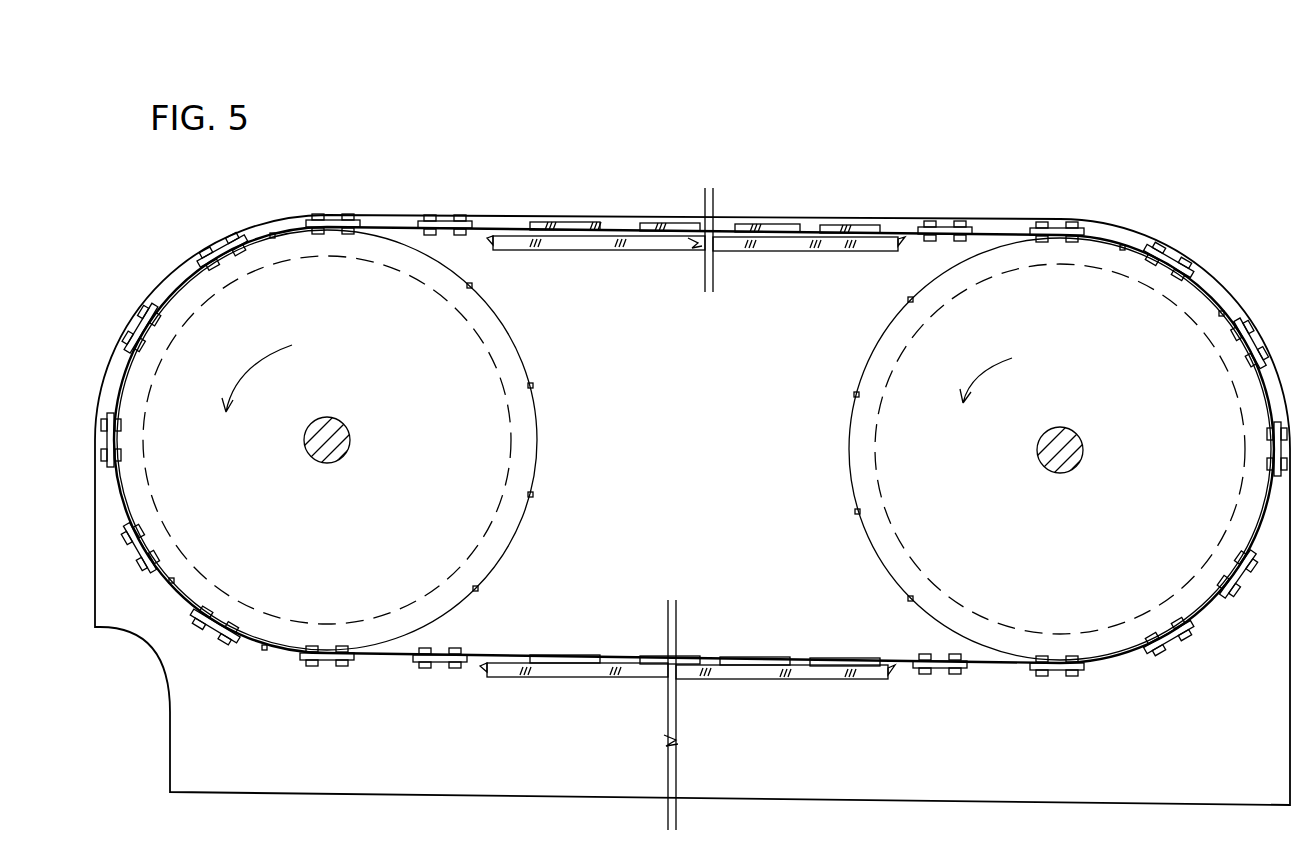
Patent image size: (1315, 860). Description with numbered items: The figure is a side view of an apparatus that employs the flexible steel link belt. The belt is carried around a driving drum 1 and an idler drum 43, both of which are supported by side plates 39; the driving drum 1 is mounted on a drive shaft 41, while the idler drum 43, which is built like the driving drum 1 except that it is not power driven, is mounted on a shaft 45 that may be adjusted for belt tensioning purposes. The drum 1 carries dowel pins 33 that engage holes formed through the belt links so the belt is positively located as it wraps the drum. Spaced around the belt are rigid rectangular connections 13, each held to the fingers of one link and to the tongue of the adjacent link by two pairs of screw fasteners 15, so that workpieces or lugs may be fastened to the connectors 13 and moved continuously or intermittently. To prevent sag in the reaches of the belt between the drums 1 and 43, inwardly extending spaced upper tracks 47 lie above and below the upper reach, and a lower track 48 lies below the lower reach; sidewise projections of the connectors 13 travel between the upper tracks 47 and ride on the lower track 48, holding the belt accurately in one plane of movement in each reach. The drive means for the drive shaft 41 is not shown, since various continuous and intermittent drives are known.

The drum 1 is at (440, 403).
The rigid connection 13 is at (343, 226).
The screw fastener 15 is at (318, 221).
The dowel pin 33 is at (273, 233).
The side plate 39 is at (447, 226).
The drive shaft 41 is at (345, 458).
The idler drum 43 is at (1145, 410).
The shaft 45 is at (1050, 470).
The upper track 47 is at (596, 222).
The lower track 48 is at (555, 677).